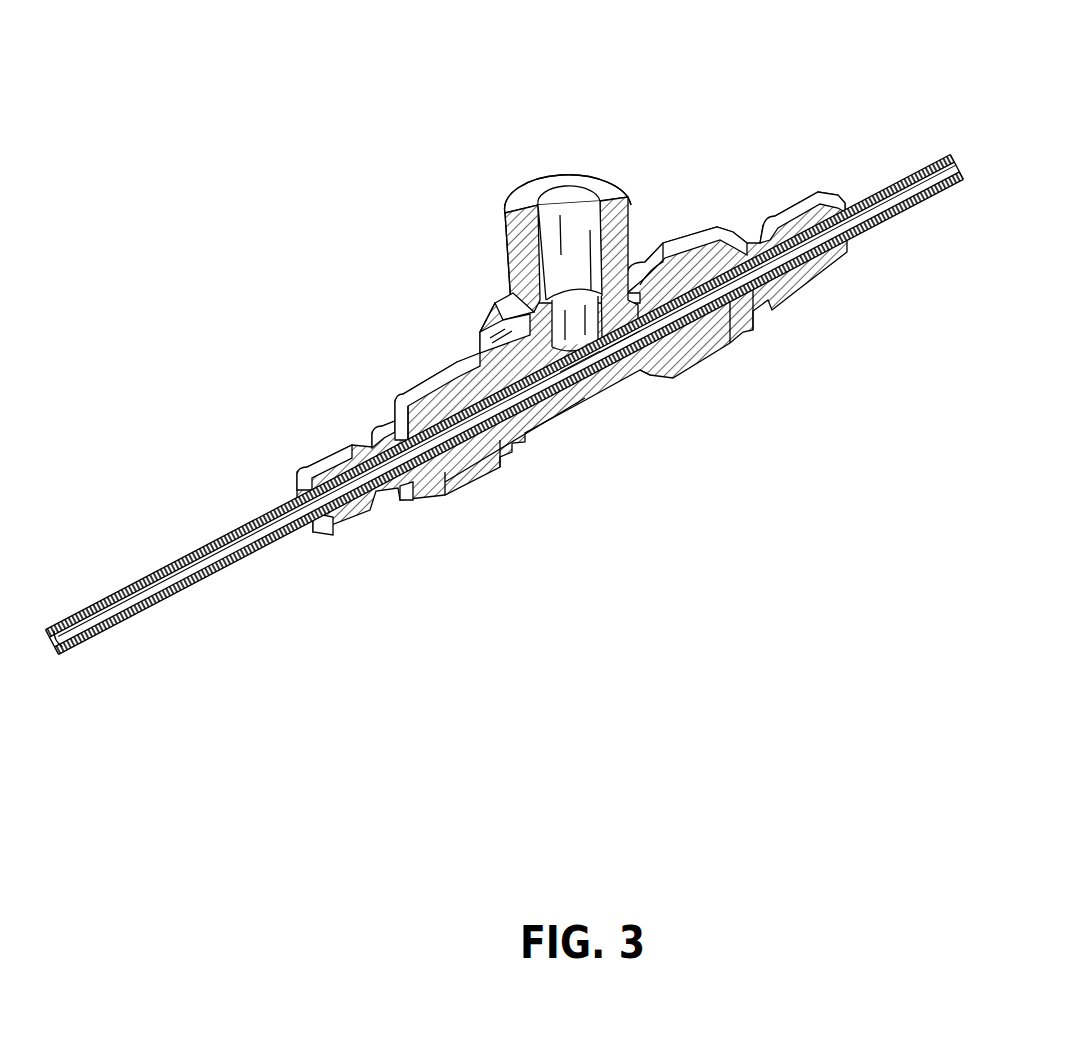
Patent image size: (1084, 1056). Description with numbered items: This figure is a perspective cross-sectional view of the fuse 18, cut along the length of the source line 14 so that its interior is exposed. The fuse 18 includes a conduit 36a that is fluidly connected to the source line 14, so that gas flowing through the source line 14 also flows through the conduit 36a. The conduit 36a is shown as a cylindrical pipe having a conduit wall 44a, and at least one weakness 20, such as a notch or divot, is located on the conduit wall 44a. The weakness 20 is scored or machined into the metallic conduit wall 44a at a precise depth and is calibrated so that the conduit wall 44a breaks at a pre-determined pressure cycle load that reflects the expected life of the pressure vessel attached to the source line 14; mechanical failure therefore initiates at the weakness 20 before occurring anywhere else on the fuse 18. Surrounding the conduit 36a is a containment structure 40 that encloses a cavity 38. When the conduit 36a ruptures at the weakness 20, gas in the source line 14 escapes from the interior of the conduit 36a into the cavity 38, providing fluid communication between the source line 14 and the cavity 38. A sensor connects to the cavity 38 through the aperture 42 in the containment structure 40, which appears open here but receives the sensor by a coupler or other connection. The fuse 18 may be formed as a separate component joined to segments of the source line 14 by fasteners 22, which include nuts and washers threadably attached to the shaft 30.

The fuse 18 is at (573, 78).
The source line 14 is at (880, 188).
The aperture 42 is at (572, 215).
The containment structure 40 is at (632, 217).
The cavity 38 is at (570, 274).
The fasteners 22 is at (776, 313).
The shaft 30 is at (743, 293).
The conduit 36a is at (613, 352).
The weakness 20 is at (580, 350).
The conduit wall 44a is at (565, 358).